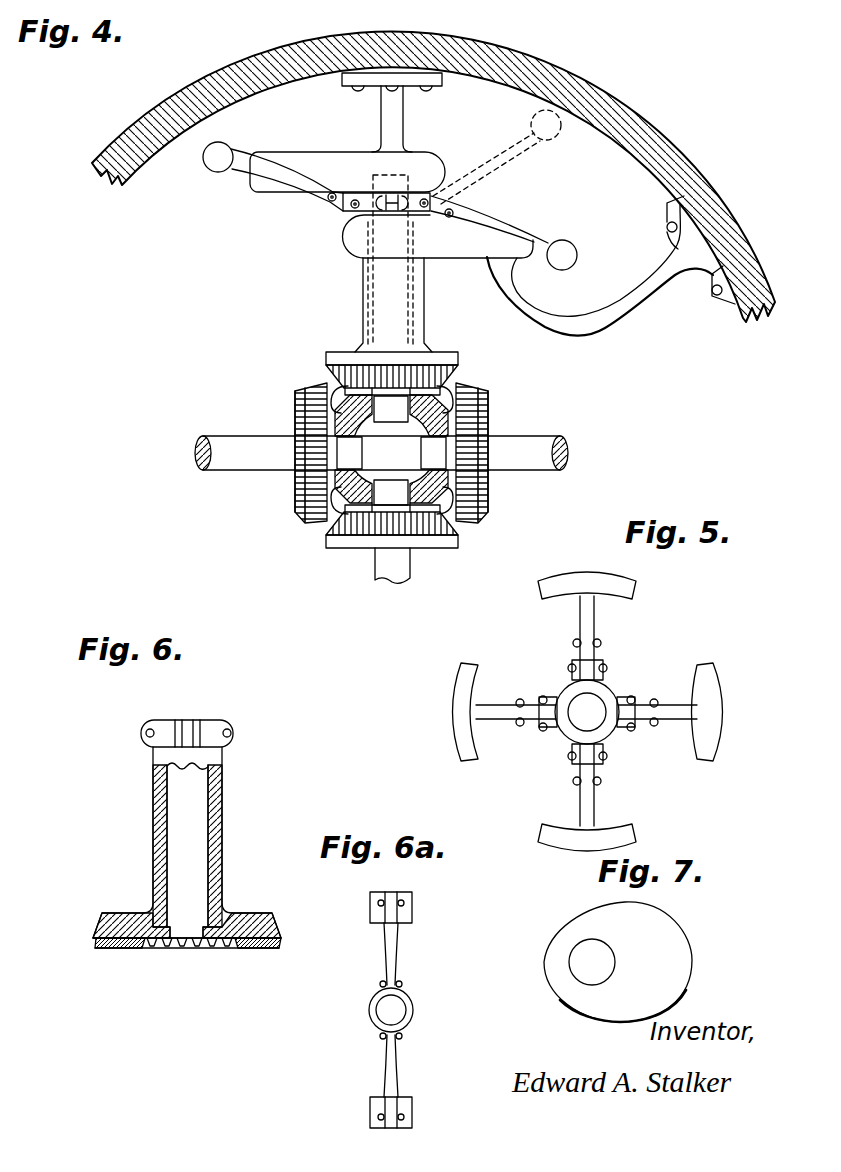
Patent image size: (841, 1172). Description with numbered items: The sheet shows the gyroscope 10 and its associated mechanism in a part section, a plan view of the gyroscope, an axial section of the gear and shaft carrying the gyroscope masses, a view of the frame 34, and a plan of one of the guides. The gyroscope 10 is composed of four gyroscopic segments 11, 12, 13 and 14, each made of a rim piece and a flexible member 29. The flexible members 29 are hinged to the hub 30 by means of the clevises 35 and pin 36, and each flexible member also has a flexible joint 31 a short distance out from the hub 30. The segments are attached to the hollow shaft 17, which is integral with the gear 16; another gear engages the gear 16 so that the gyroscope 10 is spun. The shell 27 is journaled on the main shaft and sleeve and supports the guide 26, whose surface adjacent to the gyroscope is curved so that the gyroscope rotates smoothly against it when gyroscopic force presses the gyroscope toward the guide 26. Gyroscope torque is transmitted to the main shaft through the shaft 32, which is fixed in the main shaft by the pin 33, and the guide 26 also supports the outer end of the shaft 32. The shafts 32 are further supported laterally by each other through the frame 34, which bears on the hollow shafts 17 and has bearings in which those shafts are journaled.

In FIG. 5, the gyroscope 10 is at (592, 694).
In FIG. 5, the gyroscopic segment 11 is at (568, 575).
In FIG. 5, the gyroscopic segment 12 is at (456, 702).
In FIG. 5, the gyroscopic segment 13 is at (620, 826).
In FIG. 5, the gyroscopic segment 14 is at (722, 704).
In FIG. 4, the gear 16 is at (460, 386).
In FIG. 6, the gear 16 is at (247, 950).
In FIG. 4, the hollow shaft 17 is at (428, 300).
In FIG. 6, the hollow shaft 17 is at (152, 826).
In FIG. 4, the guide 26 is at (428, 157).
In FIG. 7, the guide 26 is at (672, 942).
In FIG. 4, the shell 27 is at (568, 82).
In FIG. 5, the flexible member 29 is at (580, 617).
In FIG. 5, the hub 30 is at (634, 700).
In FIG. 6, the hub 30 is at (207, 728).
In FIG. 5, the flexible joint 31 is at (574, 644).
In FIG. 4, the shaft 32 is at (383, 175).
In FIG. 4, the pin 33 is at (352, 402).
In FIG. 6A, the frame 34 is at (398, 958).
In FIG. 5, the clevis 35 is at (606, 666).
In FIG. 6, the clevis 35 is at (233, 735).
In FIG. 5, the pin 36 is at (571, 670).